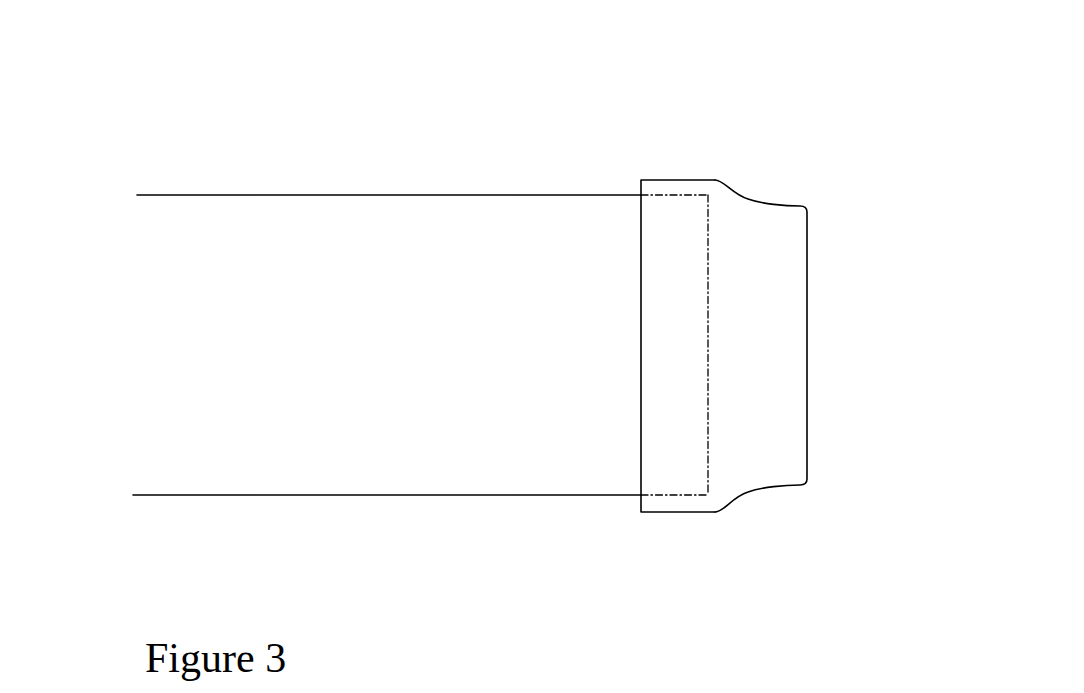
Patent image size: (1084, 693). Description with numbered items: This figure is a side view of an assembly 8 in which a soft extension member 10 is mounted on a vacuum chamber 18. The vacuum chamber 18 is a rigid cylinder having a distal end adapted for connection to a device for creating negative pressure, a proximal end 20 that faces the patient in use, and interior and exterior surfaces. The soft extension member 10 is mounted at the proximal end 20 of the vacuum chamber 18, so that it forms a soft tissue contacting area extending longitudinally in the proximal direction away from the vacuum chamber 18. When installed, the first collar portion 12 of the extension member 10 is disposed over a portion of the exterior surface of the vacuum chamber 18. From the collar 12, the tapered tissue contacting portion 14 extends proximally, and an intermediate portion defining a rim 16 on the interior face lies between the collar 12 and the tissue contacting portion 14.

The assembly 8 is at (358, 190).
The soft extension member 10 is at (647, 150).
The first collar portion 12 is at (715, 538).
The tissue contacting portion 14 is at (726, 548).
The rim 16 is at (707, 305).
The vacuum chamber 18 is at (315, 248).
The proximal end 20 is at (710, 206).